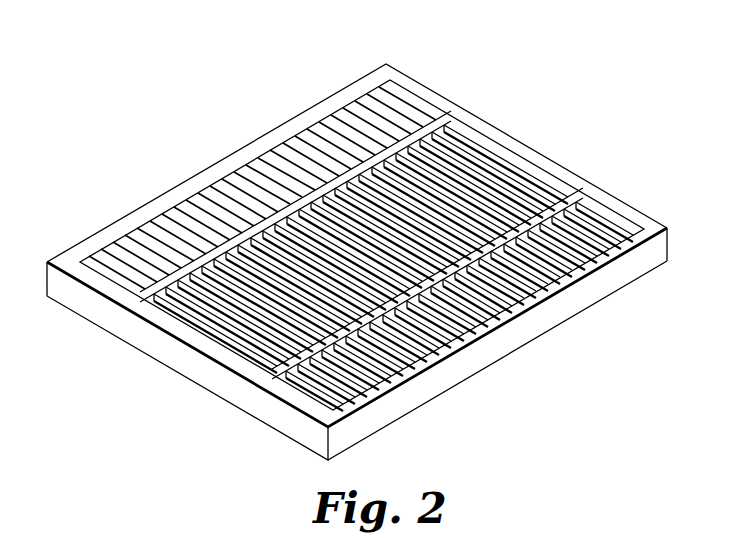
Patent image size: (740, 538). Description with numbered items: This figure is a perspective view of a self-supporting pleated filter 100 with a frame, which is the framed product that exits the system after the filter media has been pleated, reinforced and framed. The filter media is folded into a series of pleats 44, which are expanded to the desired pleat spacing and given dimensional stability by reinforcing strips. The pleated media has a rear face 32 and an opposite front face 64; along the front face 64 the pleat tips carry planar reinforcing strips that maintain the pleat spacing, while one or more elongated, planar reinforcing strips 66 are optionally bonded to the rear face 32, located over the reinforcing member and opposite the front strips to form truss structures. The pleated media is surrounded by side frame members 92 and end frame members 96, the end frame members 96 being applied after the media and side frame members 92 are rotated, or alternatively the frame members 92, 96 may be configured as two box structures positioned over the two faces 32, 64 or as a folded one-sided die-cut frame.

The pleated filter 100 is at (605, 85).
The rear face 32 is at (336, 82).
The side frame members 92 is at (400, 77).
The end frame members 96 is at (234, 161).
The front face 64 is at (453, 390).
The pleats 44 is at (492, 178).
The reinforcing strips 66 is at (440, 112).